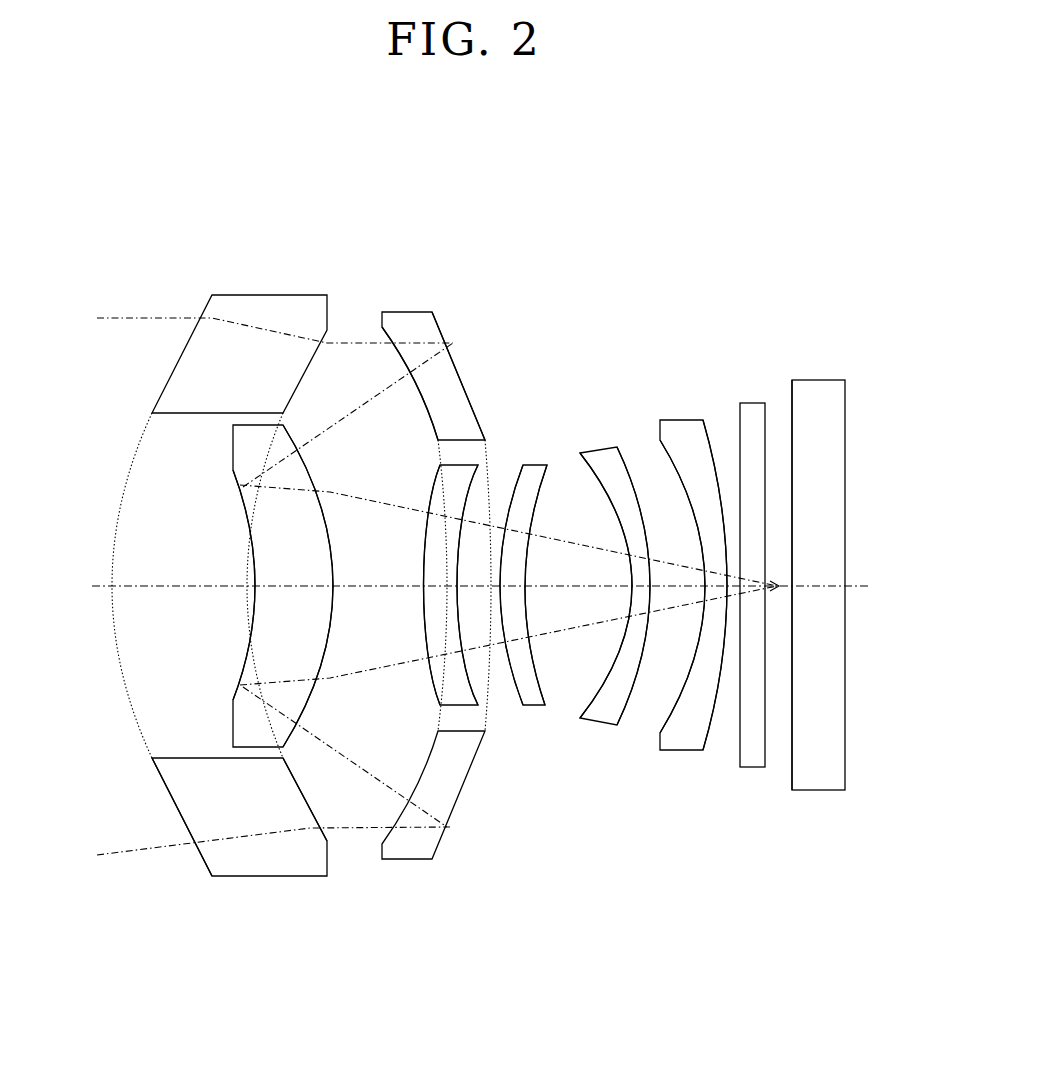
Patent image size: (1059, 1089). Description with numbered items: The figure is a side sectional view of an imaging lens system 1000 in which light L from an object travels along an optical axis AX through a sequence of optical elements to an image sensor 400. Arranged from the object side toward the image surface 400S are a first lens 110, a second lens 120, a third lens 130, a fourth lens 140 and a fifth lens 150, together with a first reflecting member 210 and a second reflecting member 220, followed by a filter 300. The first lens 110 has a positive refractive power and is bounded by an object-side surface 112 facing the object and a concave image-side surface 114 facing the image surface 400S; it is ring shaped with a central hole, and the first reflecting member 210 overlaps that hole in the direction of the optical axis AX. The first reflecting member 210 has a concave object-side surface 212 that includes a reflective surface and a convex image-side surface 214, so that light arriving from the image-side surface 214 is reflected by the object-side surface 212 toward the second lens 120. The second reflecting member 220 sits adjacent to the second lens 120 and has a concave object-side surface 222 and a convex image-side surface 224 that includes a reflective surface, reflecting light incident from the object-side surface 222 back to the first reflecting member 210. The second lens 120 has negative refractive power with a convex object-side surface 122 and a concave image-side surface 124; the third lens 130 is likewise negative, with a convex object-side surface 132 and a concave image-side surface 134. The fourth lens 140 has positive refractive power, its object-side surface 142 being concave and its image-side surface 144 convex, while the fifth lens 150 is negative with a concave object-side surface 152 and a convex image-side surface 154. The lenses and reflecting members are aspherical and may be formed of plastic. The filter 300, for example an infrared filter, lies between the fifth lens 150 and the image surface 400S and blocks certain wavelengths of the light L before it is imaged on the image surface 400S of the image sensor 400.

The imaging lens system 1000 is at (790, 194).
The first lens 110 is at (272, 295).
The object-side surface of the first lens 112 is at (201, 864).
The image-side surface of the first lens 114 is at (313, 819).
The first reflecting member 210 is at (233, 443).
The object-side surface of the first reflecting member 212 is at (242, 503).
The image-side surface of the first reflecting member 214 is at (332, 527).
The second reflecting member 220 is at (412, 312).
The object-side surface of the second reflecting member 222 is at (391, 351).
The image-side surface of the second reflecting member 224 is at (446, 339).
The second lens 120 is at (463, 463).
The object-side surface of the second lens 122 is at (422, 605).
The image-side surface of the second lens 124 is at (469, 668).
The third lens 130 is at (527, 463).
The object-side surface of the third lens 132 is at (497, 625).
The image-side surface of the third lens 134 is at (527, 602).
The fourth lens 140 is at (595, 450).
The object-side surface of the fourth lens 142 is at (591, 479).
The image-side surface of the fourth lens 144 is at (632, 471).
The fifth lens 150 is at (673, 420).
The object-side surface of the fifth lens 152 is at (672, 703).
The image-side surface of the fifth lens 154 is at (714, 738).
The filter 300 is at (748, 403).
The image sensor 400 is at (820, 380).
The image surface 400S is at (790, 781).
The light L is at (428, 582).
The optical axis AX is at (463, 588).